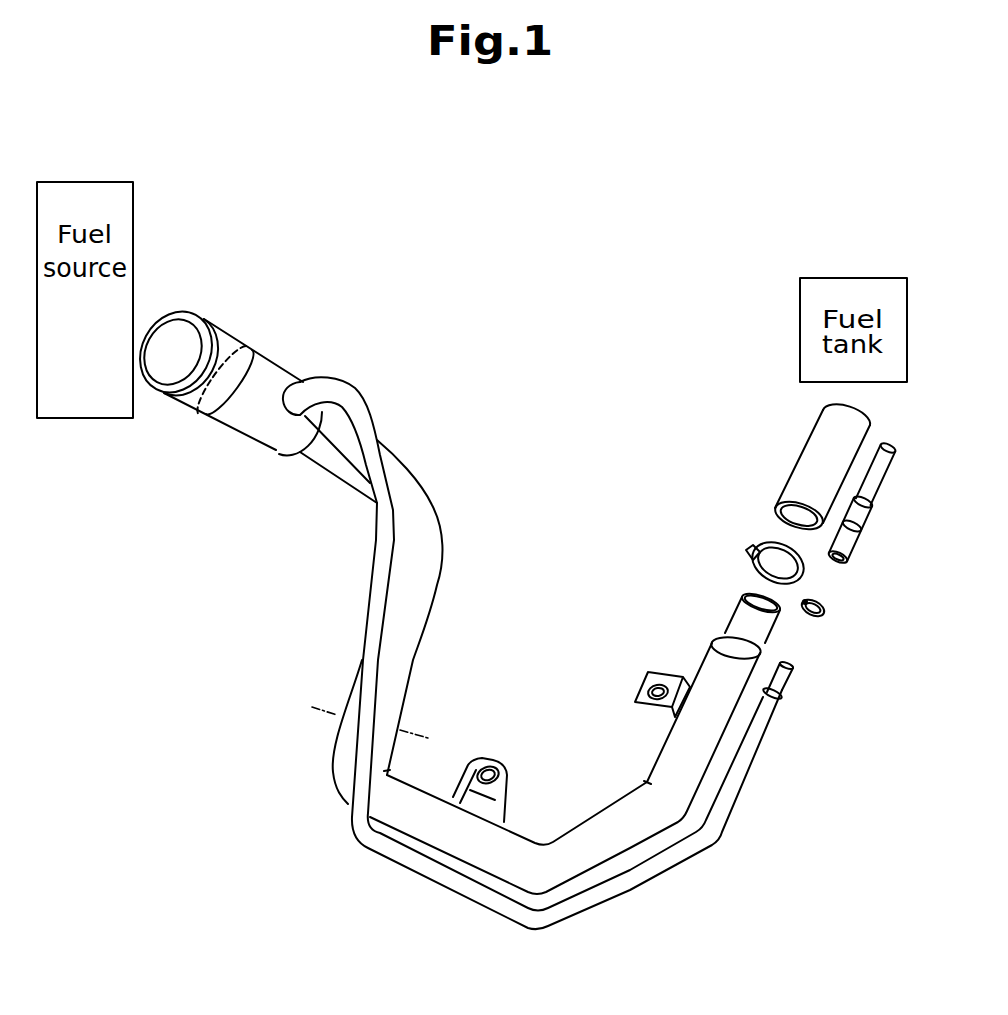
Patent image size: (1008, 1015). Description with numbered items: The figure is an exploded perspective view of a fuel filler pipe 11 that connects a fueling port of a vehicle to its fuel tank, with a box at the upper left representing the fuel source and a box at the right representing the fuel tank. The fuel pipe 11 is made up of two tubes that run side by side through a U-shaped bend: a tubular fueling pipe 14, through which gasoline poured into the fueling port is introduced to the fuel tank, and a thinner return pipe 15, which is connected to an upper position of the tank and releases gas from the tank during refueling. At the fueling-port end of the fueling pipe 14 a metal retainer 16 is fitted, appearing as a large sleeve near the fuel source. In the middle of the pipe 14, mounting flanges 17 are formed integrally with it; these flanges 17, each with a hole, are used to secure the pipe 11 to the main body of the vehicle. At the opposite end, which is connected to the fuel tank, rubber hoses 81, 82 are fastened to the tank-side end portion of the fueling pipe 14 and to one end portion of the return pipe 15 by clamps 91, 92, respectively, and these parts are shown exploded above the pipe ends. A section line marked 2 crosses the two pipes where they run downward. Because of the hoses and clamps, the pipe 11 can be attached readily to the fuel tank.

The fuel filler pipe 11 is at (502, 450).
The tubular fueling pipe 14 is at (425, 637).
The return pipe 15 is at (352, 843).
The metal retainer 16 is at (229, 334).
The mounting flanges 17 is at (635, 695).
The rubber hose 81 is at (795, 455).
The rubber hose 82 is at (877, 502).
The clamp 91 is at (747, 553).
The clamp 92 is at (823, 610).
The section line 2- 2 is at (312, 705).